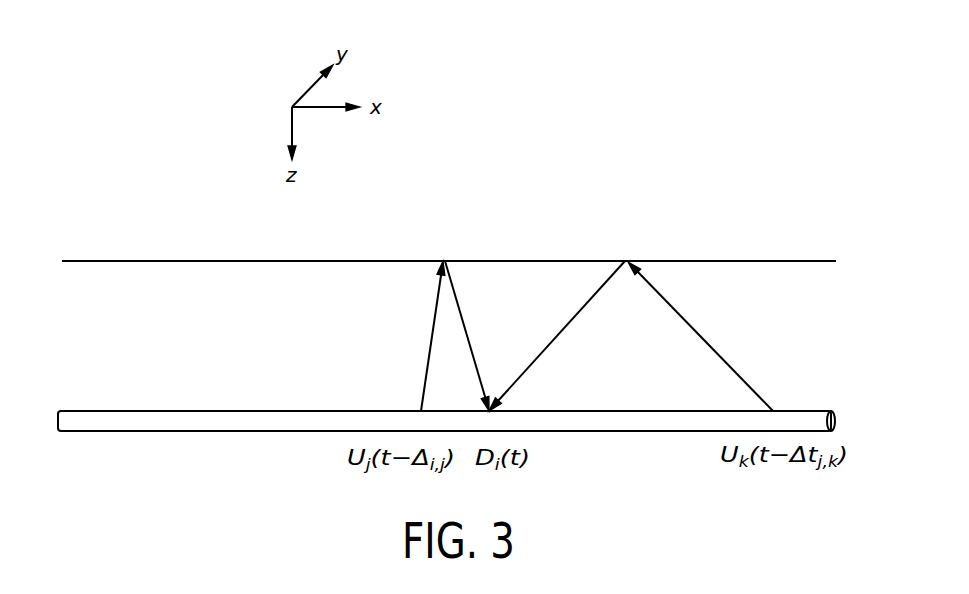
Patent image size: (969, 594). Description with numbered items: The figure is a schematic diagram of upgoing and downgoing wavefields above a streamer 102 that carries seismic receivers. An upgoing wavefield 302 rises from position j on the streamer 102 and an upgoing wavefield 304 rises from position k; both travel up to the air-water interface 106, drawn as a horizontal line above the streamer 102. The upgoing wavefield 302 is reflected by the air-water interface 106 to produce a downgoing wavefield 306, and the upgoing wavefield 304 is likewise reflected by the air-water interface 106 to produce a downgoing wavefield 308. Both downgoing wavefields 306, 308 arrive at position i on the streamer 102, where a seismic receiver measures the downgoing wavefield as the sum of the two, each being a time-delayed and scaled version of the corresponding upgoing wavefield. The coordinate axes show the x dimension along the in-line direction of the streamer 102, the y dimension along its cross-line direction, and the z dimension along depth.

The streamer 102 is at (125, 431).
The air-water interface 106 is at (175, 261).
The upgoing wavefield 302 is at (428, 340).
The upgoing wavefield 304 is at (708, 333).
The downgoing wavefield 306 is at (463, 328).
The downgoing wavefield 308 is at (558, 330).